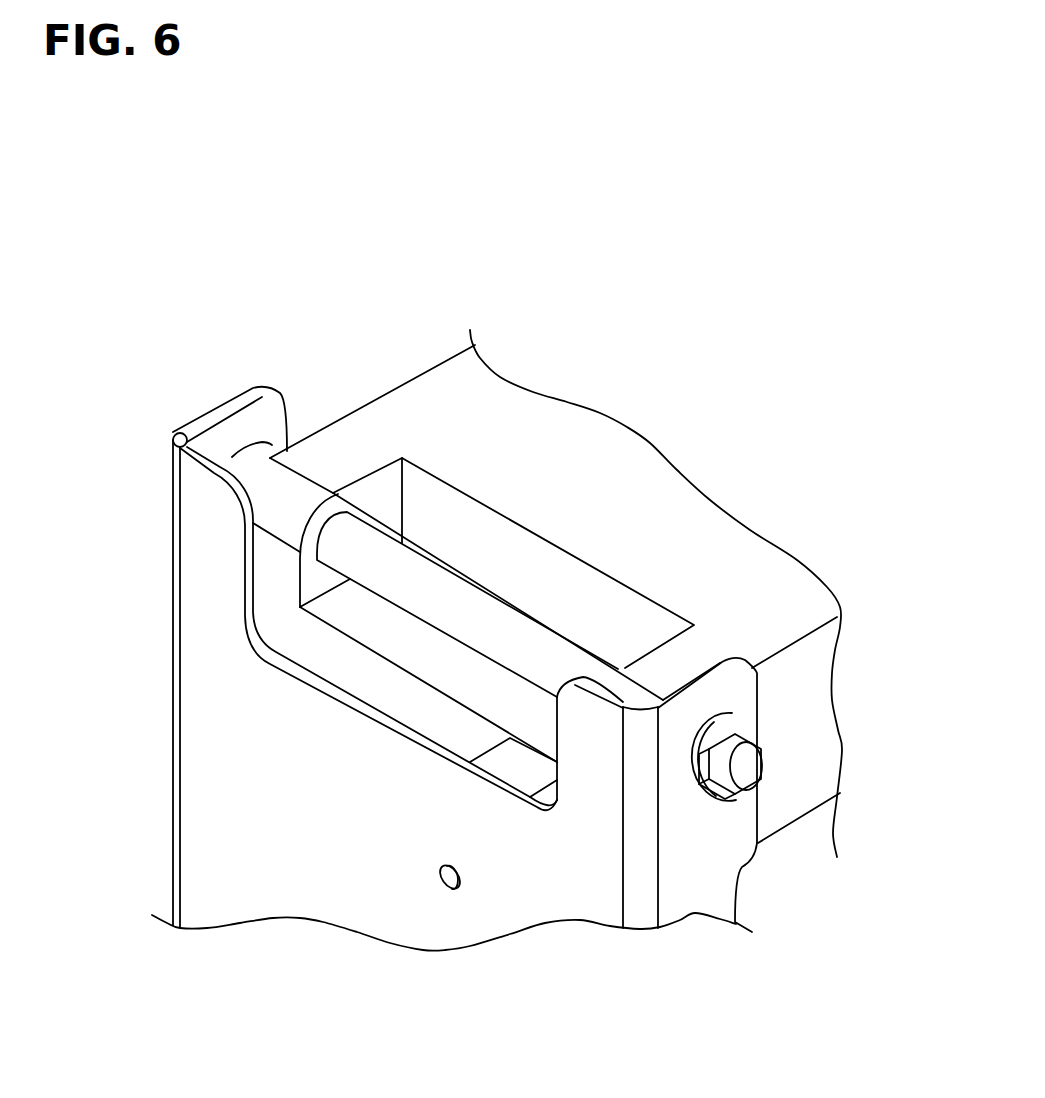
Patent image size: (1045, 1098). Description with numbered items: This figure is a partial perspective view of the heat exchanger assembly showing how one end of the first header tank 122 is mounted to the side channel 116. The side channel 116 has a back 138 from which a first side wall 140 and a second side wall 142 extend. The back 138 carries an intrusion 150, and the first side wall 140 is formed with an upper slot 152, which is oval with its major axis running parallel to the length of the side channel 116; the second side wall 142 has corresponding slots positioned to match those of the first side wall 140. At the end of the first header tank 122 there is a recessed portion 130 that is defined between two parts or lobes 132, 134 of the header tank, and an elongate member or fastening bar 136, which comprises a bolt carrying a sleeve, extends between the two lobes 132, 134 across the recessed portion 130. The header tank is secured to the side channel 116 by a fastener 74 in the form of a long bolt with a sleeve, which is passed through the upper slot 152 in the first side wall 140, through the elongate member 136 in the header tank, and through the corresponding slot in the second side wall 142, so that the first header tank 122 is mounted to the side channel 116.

The fastener 74 is at (740, 777).
The side channel 116 is at (208, 875).
The first header tank 122 is at (719, 375).
The recessed portion 130 is at (368, 618).
The part or lobe 132 is at (362, 442).
The part or lobe 134 is at (605, 684).
The elongate member or fastening bar 136 is at (345, 548).
The back 138 is at (208, 825).
The first side wall 140 is at (692, 897).
The second side wall 142 is at (232, 438).
The intrusion 150 is at (380, 711).
The upper slot 152 is at (730, 716).